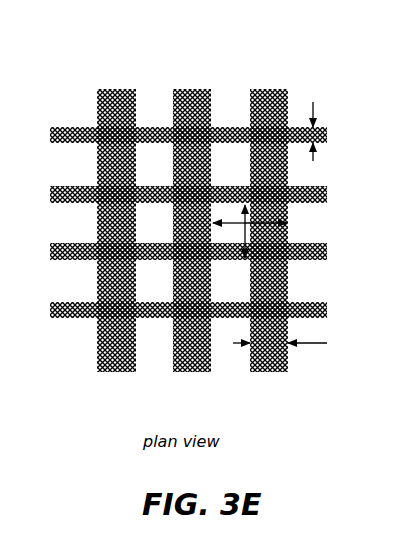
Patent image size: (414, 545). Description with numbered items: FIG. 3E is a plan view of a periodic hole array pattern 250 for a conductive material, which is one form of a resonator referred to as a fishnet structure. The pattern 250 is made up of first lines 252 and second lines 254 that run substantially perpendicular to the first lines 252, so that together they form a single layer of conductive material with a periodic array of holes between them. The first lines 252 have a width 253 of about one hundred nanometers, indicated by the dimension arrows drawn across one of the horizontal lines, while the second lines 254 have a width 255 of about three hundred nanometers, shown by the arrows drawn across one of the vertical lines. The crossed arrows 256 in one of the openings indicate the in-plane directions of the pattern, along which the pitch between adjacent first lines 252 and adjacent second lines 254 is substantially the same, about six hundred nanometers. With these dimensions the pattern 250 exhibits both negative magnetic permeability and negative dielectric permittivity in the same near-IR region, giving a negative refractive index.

The periodic hole array pattern 250 is at (217, 213).
The first lines 252 is at (70, 307).
The width of first lines 253 is at (315, 112).
The second lines 254 is at (98, 365).
The vertical bar width 255 is at (307, 343).
The lateral movement directions 256 is at (258, 224).